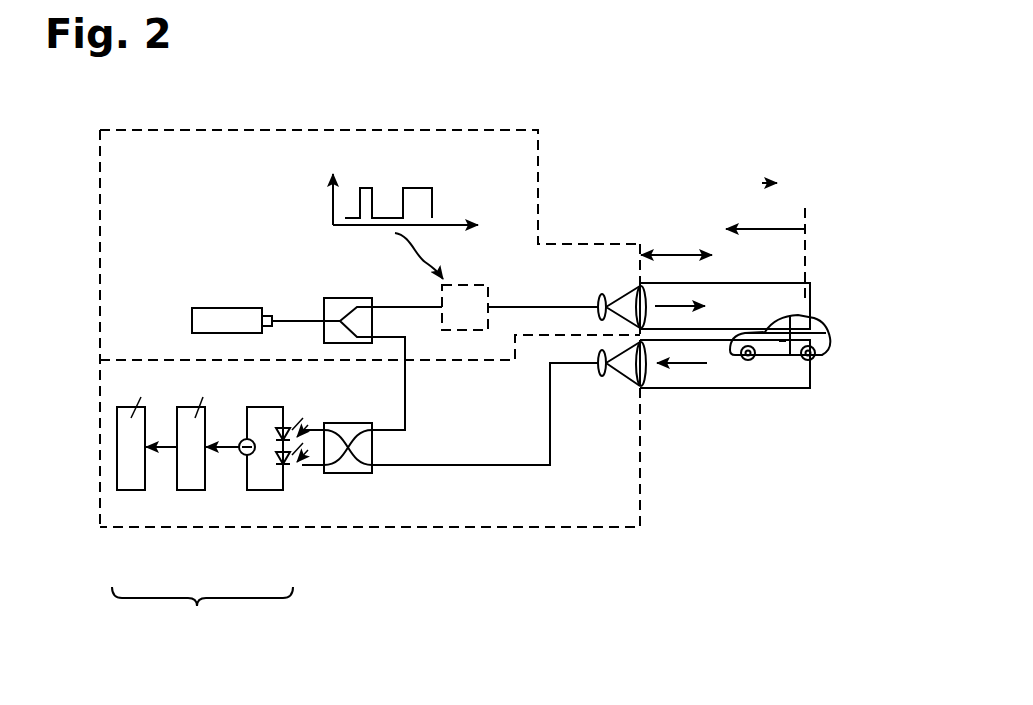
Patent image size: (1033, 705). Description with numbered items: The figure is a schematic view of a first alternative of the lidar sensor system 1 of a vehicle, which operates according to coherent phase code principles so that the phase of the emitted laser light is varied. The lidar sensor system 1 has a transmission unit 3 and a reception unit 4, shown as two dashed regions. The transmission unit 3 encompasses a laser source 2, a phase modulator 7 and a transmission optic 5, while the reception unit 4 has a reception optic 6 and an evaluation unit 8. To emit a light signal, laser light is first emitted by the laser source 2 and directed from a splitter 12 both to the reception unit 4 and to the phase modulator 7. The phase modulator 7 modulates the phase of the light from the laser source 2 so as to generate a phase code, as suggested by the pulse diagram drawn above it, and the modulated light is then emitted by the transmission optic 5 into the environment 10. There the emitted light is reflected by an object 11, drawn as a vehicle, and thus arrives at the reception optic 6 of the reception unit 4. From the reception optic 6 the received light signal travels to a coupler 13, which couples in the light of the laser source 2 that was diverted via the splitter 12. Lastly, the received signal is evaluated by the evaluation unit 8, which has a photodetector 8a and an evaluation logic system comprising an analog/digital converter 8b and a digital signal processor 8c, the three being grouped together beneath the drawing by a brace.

The lidar sensor system 1 is at (84, 193).
The laser source 2 is at (222, 308).
The transmission unit 3 is at (540, 154).
The reception unit 4 is at (642, 510).
The transmission optic 5 is at (636, 290).
The reception optic 6 is at (653, 390).
The phase modulator 7 is at (490, 291).
The evaluation unit 8 is at (202, 617).
The photodetector 8a is at (265, 491).
The analog/digital converter 8b is at (190, 491).
The digital signal processor 8c is at (130, 491).
The environment 10 is at (834, 302).
The object 11 is at (794, 362).
The splitter 12 is at (338, 298).
The coupler 13 is at (352, 474).